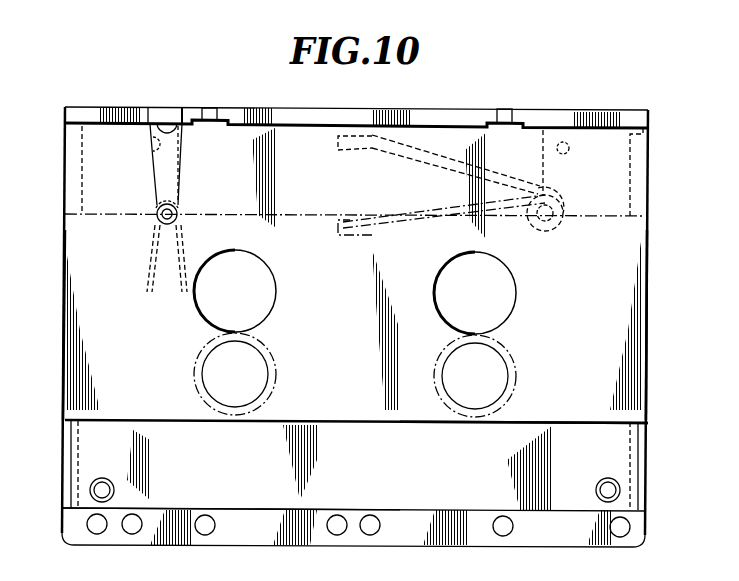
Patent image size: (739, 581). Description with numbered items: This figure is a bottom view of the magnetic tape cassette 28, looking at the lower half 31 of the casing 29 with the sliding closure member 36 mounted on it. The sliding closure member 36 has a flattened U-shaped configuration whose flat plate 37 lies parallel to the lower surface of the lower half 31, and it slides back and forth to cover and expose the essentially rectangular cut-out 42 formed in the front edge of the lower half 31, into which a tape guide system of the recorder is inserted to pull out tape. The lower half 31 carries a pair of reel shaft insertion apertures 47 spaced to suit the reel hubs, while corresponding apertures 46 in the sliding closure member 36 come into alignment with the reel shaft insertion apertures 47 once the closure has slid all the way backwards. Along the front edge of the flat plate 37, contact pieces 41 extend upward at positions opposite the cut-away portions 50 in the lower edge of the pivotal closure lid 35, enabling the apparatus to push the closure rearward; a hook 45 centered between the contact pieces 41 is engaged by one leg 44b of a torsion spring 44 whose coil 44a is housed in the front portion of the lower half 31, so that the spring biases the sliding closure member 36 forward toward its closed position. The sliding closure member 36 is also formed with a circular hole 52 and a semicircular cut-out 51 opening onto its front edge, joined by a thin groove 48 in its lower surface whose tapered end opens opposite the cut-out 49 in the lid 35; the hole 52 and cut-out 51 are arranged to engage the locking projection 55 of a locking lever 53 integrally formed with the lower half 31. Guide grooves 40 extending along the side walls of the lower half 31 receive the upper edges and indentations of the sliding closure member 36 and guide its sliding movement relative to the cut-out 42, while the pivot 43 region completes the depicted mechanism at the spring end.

The cassette 28 is at (648, 167).
The casing 29 is at (649, 415).
The lower half 31 is at (250, 500).
The pivotal closure lid 35 is at (94, 107).
The sliding closure member 36 is at (80, 237).
The flat plate 37 is at (646, 306).
The guide grooves 40 is at (78, 442).
The contact pieces 41 is at (213, 116).
The cut-out 42 is at (277, 153).
The pivot pin 43 is at (556, 216).
The torsion spring 44 is at (557, 195).
The coil 44a is at (561, 214).
The leg 44b is at (407, 146).
The hook 45 is at (338, 152).
The apertures 46 is at (273, 296).
The reel shaft insertion apertures 47 is at (270, 372).
The thin groove 48 is at (156, 163).
The cut-out 49 is at (150, 122).
The cut-away portions 50 is at (208, 112).
The semicircular cut-out 51 is at (168, 132).
The circular hole 52 is at (160, 206).
The locking lever 53 is at (176, 205).
The locking projection 55 is at (160, 218).